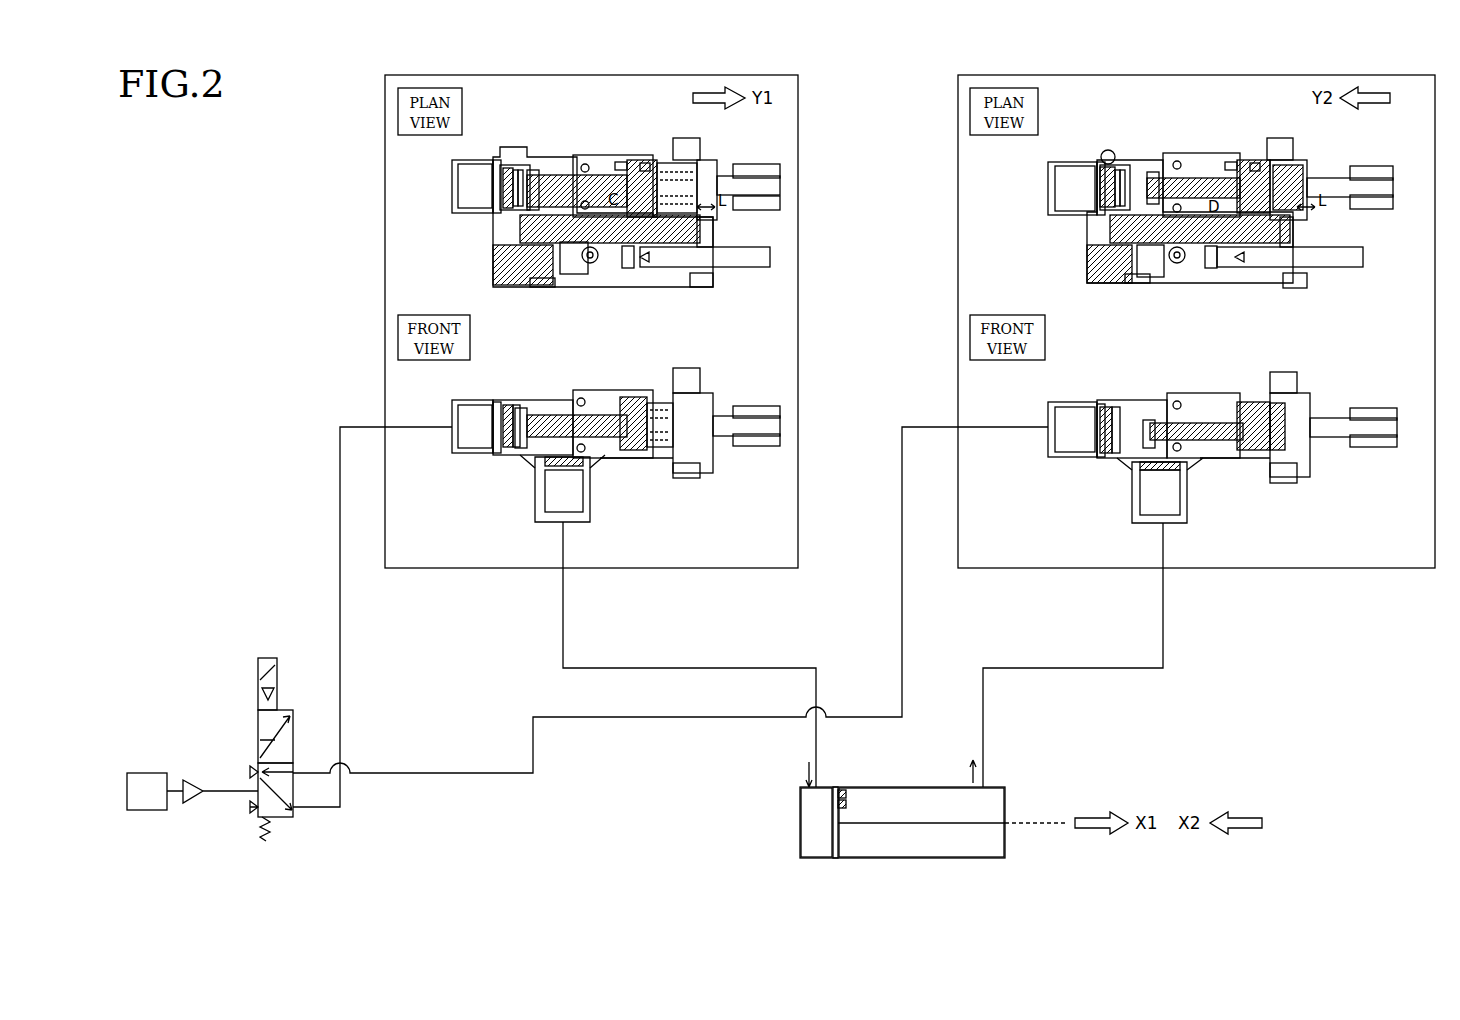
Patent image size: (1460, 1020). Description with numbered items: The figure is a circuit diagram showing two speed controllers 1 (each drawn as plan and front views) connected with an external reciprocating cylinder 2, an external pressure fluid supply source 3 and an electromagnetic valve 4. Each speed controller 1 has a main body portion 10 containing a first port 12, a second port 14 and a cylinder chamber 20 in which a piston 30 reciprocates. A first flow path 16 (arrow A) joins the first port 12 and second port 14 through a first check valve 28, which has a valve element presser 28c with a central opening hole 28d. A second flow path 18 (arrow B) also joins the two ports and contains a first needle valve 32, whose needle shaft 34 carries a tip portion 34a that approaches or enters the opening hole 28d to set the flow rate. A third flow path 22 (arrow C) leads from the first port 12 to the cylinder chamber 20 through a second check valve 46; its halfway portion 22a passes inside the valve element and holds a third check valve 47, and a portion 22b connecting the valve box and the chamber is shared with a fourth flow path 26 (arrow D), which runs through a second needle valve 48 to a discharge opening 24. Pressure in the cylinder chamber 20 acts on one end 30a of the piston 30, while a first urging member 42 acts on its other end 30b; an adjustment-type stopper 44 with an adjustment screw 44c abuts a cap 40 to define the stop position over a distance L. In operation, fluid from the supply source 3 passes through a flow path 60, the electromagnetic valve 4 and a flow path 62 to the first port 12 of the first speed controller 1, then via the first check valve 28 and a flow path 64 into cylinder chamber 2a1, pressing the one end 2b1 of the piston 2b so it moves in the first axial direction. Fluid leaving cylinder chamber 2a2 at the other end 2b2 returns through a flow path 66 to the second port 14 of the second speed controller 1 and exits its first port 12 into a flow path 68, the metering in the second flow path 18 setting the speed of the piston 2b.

The speed controller 1 is at (385, 110).
The external cylinder 2 is at (1032, 774).
The cylinder chamber 2a1 is at (808, 805).
The cylinder chamber 2a2 is at (950, 803).
The piston 2b is at (832, 845).
The one end of piston 2b1 is at (838, 795).
The other end of piston 2b2 is at (842, 805).
The pressure fluid supply source 3 is at (145, 775).
The electromagnetic valve 4 is at (276, 645).
The main body portion 10 is at (685, 140).
The first port 12 is at (455, 188).
The second port 14 is at (570, 525).
The first flow path 16 is at (512, 402).
The second flow path 18 is at (497, 177).
The cylinder chamber 20 is at (598, 155).
The third flow path 22 is at (495, 232).
The halfway portion of third flow path 22a is at (548, 288).
The connecting portion 22b is at (698, 221).
The discharge opening 24 is at (655, 268).
The fourth flow path 26 is at (628, 268).
The first check valve 28 is at (507, 168).
The valve element presser 28c is at (515, 170).
The opening hole 28d is at (521, 170).
The piston 30 is at (640, 160).
The one end of piston 30a is at (620, 162).
The other end of piston 30b is at (645, 163).
The first needle valve 32 is at (507, 108).
The needle shaft 34 is at (560, 175).
The tip portion 34a is at (535, 170).
The cap 40 is at (707, 160).
The first urging member 42 is at (663, 163).
The adjustment-type stopper 44 is at (752, 164).
The adjustment screw 44c is at (752, 210).
The second check valve 46 is at (572, 274).
The third check valve 47 is at (592, 263).
The second needle valve 48 is at (647, 262).
The flow path 60 is at (212, 788).
The flow path 62 is at (338, 478).
The flow path 64 is at (565, 625).
The flow path 66 is at (1165, 625).
The flow path 68 is at (902, 478).